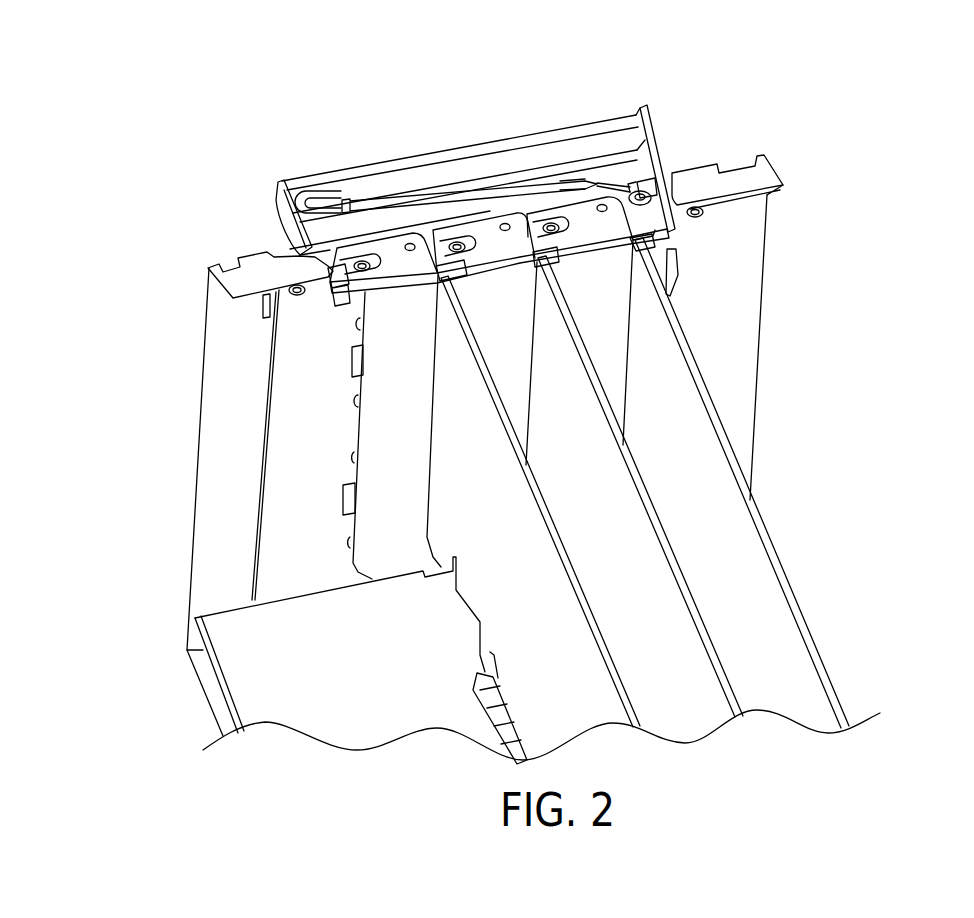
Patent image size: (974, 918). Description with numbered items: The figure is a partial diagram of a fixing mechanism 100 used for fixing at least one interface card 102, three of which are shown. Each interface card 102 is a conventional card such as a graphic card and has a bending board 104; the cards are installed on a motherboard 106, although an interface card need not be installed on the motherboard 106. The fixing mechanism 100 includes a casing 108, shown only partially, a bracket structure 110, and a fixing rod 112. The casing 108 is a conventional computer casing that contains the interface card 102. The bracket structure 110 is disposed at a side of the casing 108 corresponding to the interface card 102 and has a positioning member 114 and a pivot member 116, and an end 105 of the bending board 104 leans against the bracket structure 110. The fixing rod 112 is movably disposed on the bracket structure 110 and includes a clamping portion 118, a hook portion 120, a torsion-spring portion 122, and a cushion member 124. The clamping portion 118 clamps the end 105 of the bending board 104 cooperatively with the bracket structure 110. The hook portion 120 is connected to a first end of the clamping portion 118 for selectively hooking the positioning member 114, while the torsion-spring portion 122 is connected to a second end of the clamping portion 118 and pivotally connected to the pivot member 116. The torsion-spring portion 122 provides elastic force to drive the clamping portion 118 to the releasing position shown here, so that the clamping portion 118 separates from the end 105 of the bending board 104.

The fixing mechanism 100 is at (268, 136).
The interface card 102 is at (732, 553).
The bending board 104 is at (608, 348).
The end of the bending board 105 is at (603, 228).
The motherboard 106 is at (263, 702).
The casing 108 is at (732, 208).
The bracket structure 110 is at (282, 187).
The fixing rod 112 is at (418, 180).
The positioning member 114 is at (296, 274).
The pivot member 116 is at (647, 174).
The clamping portion 118 is at (597, 177).
The hook portion 120 is at (336, 196).
The torsion-spring portion 122 is at (598, 188).
The cushion member 124 is at (469, 197).